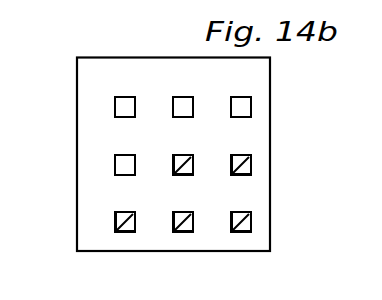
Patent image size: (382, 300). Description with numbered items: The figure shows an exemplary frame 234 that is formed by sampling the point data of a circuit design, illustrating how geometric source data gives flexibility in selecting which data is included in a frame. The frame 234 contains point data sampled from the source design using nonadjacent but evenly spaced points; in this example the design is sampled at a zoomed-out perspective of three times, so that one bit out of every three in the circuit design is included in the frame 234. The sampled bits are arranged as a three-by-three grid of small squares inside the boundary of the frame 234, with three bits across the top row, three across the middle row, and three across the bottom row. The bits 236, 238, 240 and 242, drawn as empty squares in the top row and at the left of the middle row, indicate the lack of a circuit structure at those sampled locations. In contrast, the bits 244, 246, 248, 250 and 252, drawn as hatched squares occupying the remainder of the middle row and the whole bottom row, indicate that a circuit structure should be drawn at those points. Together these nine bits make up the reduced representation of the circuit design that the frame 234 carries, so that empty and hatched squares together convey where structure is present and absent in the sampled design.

The frame 234 is at (77, 141).
The bit 236 is at (115, 107).
The bit 238 is at (182, 97).
The bit 240 is at (251, 107).
The bit 242 is at (115, 166).
The bit 244 is at (174, 157).
The bit 246 is at (251, 167).
The bit 248 is at (115, 222).
The bit 250 is at (183, 233).
The bit 252 is at (251, 222).